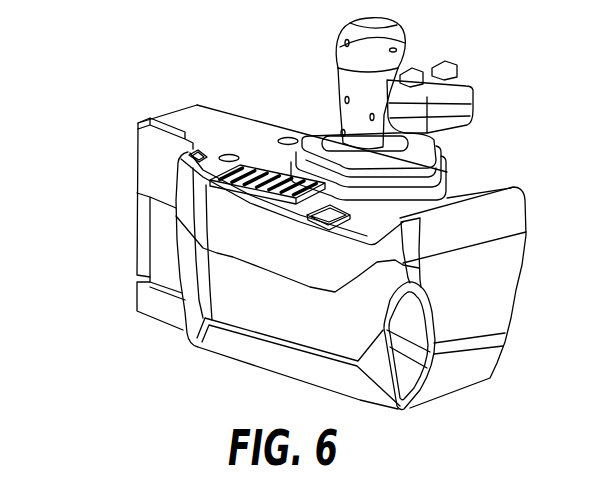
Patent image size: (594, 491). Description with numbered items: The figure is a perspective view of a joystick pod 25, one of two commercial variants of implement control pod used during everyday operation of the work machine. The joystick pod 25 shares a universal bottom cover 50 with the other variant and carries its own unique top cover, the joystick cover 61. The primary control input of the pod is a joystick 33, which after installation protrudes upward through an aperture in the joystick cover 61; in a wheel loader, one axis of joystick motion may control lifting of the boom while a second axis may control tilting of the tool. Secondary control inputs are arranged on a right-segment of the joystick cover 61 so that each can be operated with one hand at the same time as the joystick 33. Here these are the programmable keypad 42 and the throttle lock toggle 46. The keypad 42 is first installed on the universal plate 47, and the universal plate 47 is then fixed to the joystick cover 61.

The joystick pod 25 is at (282, 78).
The joystick 33 is at (385, 33).
The programmable keypad 42 is at (246, 182).
The throttle lock toggle 46 is at (327, 218).
The universal plate 47 is at (278, 198).
The universal bottom cover 50 is at (500, 280).
The joystick cover 61 is at (508, 210).